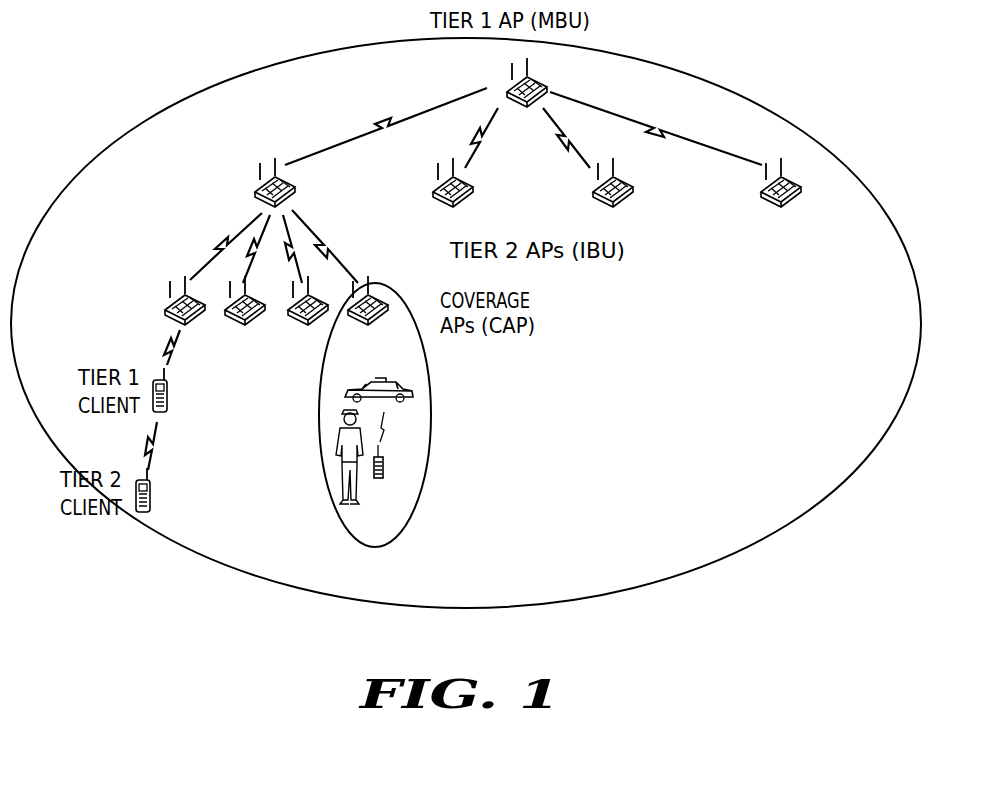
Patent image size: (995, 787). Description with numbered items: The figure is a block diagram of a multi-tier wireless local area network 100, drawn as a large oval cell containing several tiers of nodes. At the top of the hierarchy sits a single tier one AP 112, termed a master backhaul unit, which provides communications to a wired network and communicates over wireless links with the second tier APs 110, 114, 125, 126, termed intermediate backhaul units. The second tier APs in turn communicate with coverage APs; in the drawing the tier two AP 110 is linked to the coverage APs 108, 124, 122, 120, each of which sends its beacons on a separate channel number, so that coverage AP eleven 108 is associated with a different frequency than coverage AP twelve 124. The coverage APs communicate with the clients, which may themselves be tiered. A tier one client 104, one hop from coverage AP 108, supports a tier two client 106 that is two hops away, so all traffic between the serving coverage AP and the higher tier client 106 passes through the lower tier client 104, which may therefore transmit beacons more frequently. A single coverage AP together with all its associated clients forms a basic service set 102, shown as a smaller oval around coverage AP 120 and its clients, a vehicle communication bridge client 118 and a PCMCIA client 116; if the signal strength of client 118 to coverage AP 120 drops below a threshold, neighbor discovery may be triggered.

The multi-tier wireless local area network 100 is at (717, 650).
The basic service set 102 is at (414, 533).
The tier 1 client 104 is at (168, 399).
The tier 2 client 106 is at (151, 501).
The coverage AP 11 108 is at (170, 298).
The tier 2 AP 1 110 is at (259, 180).
The tier 1 AP 112 is at (510, 76).
The tier 2 AP 2 114 is at (437, 172).
The PCMCIA client 116 is at (454, 481).
The vehicle communication bridge client 118 is at (445, 427).
The coverage AP 14 120 is at (365, 284).
The coverage AP 13 122 is at (293, 298).
The coverage AP 12 124 is at (230, 298).
The tier 2 AP 3 125 is at (597, 172).
The tier 2 AP 4 126 is at (766, 172).